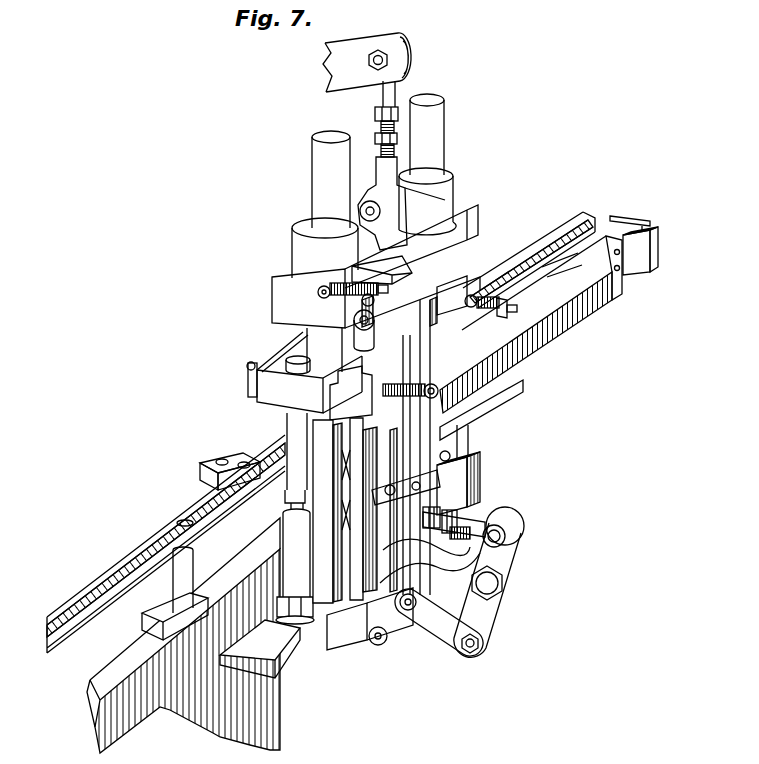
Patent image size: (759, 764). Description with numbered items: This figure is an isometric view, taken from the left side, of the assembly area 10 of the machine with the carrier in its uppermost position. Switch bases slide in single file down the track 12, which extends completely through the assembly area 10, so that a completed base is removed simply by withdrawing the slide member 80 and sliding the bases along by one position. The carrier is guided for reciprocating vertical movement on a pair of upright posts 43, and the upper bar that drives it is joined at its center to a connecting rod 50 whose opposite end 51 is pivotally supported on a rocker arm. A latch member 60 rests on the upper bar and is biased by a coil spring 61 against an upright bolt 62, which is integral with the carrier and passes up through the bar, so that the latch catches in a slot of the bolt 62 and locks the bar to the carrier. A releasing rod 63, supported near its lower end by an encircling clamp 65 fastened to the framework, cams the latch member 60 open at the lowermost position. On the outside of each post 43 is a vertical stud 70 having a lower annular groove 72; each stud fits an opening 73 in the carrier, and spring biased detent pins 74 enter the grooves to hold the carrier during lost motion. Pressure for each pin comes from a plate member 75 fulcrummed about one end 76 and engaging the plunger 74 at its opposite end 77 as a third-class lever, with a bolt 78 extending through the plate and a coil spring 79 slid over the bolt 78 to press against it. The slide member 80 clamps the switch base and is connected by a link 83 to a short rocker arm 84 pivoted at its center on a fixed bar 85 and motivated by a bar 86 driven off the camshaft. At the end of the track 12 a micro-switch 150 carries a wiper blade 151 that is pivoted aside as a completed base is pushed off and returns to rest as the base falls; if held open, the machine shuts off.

The assembly area 10 is at (538, 189).
The track 12 is at (112, 726).
The upright posts 43 is at (318, 156).
The connecting rod 50 is at (380, 126).
The opposite end of connecting rod 51 is at (348, 66).
The latch member 60 is at (392, 250).
The coil spring 61 is at (345, 288).
The upright bolt 62 is at (398, 265).
The releasing rod 63 is at (358, 531).
The encircling clamp 65 is at (342, 635).
The vertical stud 70 is at (293, 420).
The lower annular groove 72 is at (235, 498).
The opening 73 is at (269, 357).
The spring biased detent pins 74 is at (266, 360).
The plate member 75 is at (467, 285).
The fulcrum end of plate member 76 is at (432, 318).
The opposite end of plate member 77 is at (413, 430).
The bolt 78 is at (512, 308).
The coil spring 79 is at (488, 312).
The slide member 80 is at (380, 567).
The link 83 is at (503, 508).
The short rocker arm 84 is at (508, 562).
The fixed bar 85 is at (452, 573).
The bar 86 is at (452, 652).
The micro-switch 150 is at (637, 248).
The wiper blade 151 is at (622, 216).